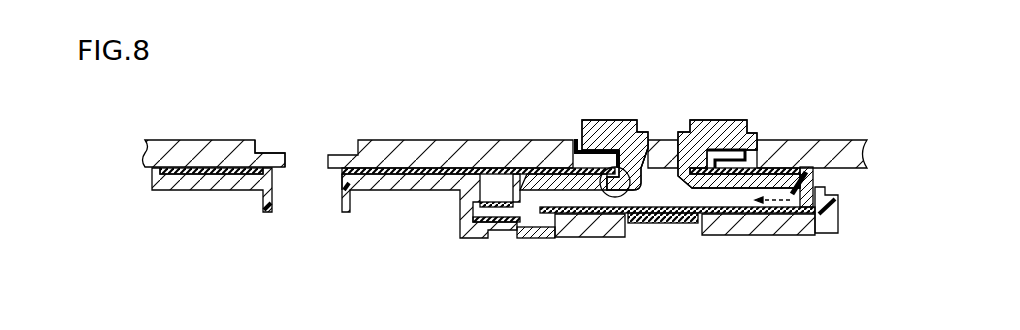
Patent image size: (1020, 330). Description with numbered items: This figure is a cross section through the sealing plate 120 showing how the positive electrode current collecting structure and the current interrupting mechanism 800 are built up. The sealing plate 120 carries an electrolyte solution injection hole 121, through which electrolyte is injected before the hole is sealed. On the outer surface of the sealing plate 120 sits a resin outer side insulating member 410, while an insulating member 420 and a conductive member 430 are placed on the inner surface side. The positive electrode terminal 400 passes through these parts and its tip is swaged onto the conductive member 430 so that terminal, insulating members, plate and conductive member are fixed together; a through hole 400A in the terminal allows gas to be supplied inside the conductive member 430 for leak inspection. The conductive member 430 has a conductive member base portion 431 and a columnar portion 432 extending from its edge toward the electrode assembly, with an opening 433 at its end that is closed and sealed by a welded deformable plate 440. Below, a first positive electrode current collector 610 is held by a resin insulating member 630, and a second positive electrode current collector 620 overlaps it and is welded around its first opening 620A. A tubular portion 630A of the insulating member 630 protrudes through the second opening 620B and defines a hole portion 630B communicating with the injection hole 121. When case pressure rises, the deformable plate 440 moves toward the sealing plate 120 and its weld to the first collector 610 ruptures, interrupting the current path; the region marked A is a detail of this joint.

The sealing plate 120 is at (461, 152).
The electrolyte solution injection hole 121 is at (288, 160).
The positive electrode terminal 400 is at (606, 127).
The through hole 400A is at (655, 140).
The outer side insulating member 410 is at (577, 139).
The insulating member 420 is at (800, 172).
The conductive member 430 is at (550, 180).
The conductive member base portion 431 is at (742, 180).
The columnar portion 432 is at (788, 192).
The opening 433 is at (664, 192).
The deformable plate 440 is at (656, 224).
The first positive electrode current collector 610 is at (575, 228).
The second positive electrode current collector 620 is at (396, 188).
The first opening 620A is at (517, 232).
The second opening 620B is at (338, 180).
The insulating member 630 is at (220, 165).
The tubular portion 630A is at (264, 203).
The hole portion 630B is at (343, 190).
The current interrupting mechanism 800 is at (838, 197).
The detail region A is at (620, 198).